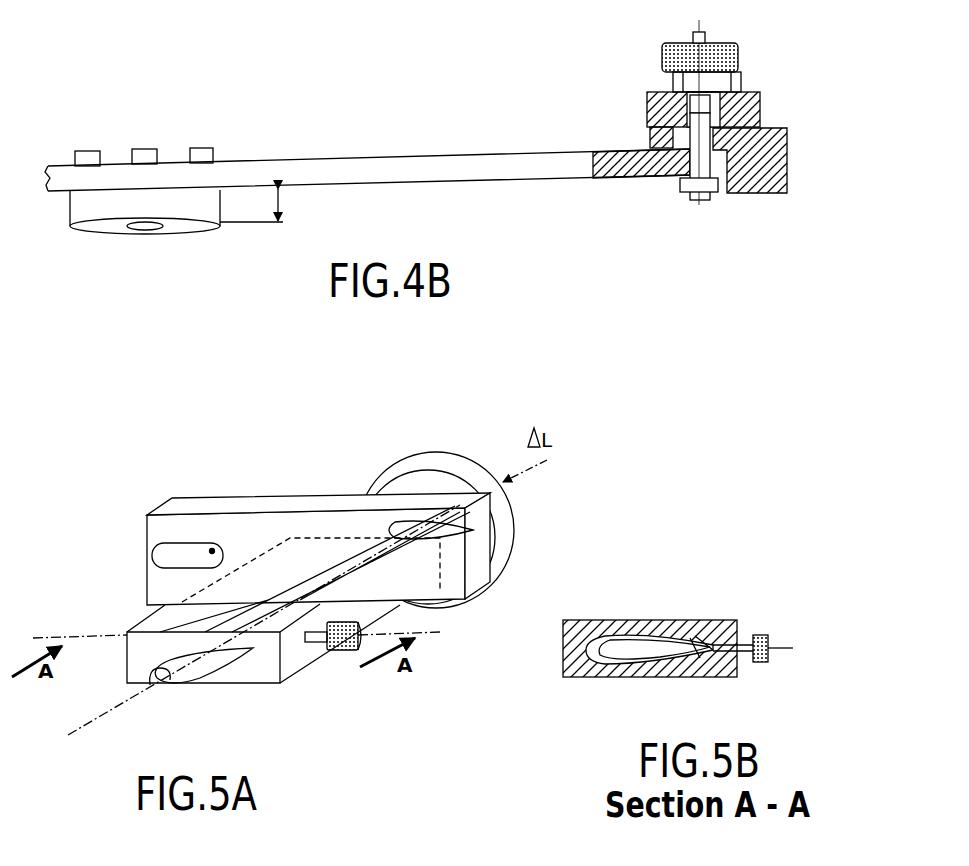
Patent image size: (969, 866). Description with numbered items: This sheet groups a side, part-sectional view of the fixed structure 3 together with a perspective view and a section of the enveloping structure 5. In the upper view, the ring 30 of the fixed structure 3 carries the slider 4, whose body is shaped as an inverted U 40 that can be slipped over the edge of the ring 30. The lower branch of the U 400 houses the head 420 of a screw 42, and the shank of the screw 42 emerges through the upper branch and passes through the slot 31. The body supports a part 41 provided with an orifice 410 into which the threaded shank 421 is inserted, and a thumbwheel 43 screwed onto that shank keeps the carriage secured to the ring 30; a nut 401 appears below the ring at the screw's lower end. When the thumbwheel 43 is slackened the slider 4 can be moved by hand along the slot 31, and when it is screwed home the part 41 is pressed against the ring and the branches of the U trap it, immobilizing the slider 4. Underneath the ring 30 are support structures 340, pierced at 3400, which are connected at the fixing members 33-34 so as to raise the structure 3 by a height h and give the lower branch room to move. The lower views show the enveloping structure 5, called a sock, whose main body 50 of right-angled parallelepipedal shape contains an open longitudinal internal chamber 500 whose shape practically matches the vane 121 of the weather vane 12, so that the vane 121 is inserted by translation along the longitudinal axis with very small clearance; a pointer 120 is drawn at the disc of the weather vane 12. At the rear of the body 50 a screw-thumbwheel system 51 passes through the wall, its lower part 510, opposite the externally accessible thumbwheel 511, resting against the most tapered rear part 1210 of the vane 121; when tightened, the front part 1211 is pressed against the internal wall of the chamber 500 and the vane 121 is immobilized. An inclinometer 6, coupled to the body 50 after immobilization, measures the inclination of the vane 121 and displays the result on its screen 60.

In FIG. 4B, the fixed structure 3 is at (366, 184).
In FIG. 4B, the ring 30 is at (412, 163).
In FIG. 4B, the slot 31 is at (662, 178).
In FIG. 4B, the fixing members 33-34 is at (106, 148).
In FIG. 4B, the support structure 340 is at (131, 238).
In FIG. 4B, the piercing of support structure 3400 is at (145, 229).
In FIG. 4B, the slider 4 is at (710, 121).
In FIG. 4B, the inverted U body 40 is at (787, 160).
In FIG. 4B, the part 41 is at (760, 100).
In FIG. 4B, the screw 42 is at (690, 33).
In FIG. 4B, the thumbwheel 43 is at (662, 55).
In FIG. 4B, the lower branch of the U 400 is at (652, 137).
In FIG. 4B, the nut 401 is at (680, 192).
In FIG. 4B, the orifice 410 is at (740, 80).
In FIG. 4B, the screw head 420 is at (714, 190).
In FIG. 4B, the threaded shank 421 is at (660, 95).
In FIG. 5A, the weather vane 12 is at (400, 454).
In FIG. 5A, the pointer 120 is at (451, 490).
In FIG. 5A, the inclinometer 6 is at (296, 529).
In FIG. 5A, the screen 60 is at (160, 567).
In FIG. 5A, the enveloping structure 5 is at (269, 628).
In FIG. 5B, the enveloping structure 5 is at (680, 632).
In FIG. 5A, the main body 50 is at (264, 683).
In FIG. 5B, the main body 50 is at (568, 678).
In FIG. 5A, the screw-thumbwheel system 51 is at (352, 652).
In FIG. 5B, the screw-thumbwheel system 51 is at (762, 632).
In FIG. 5A, the longitudinal internal chamber 500 is at (150, 688).
In FIG. 5B, the lower part of screw-thumbwheel system 510 is at (683, 657).
In FIG. 5B, the thumbwheel 511 is at (757, 663).
In FIG. 5A, the vane 121 is at (213, 670).
In FIG. 5B, the vane 121 is at (627, 664).
In FIG. 5B, the rear part of the vane 1210 is at (705, 644).
In FIG. 5B, the front part of the vane 1211 is at (598, 650).